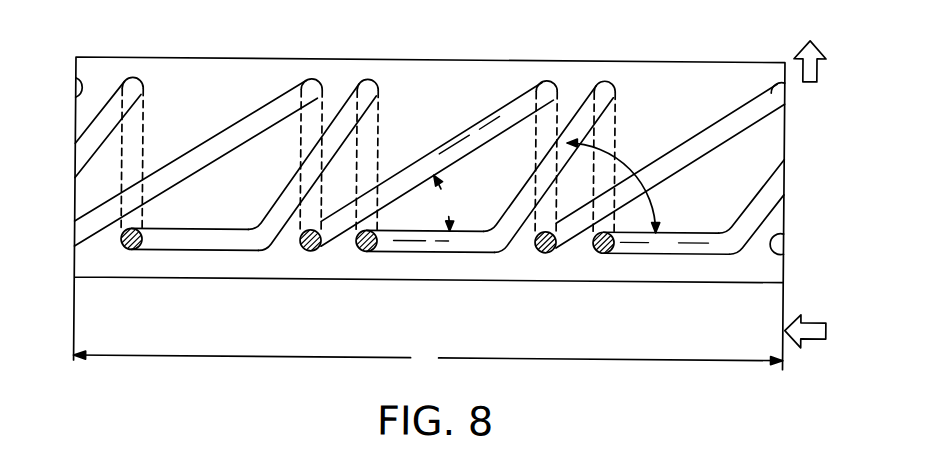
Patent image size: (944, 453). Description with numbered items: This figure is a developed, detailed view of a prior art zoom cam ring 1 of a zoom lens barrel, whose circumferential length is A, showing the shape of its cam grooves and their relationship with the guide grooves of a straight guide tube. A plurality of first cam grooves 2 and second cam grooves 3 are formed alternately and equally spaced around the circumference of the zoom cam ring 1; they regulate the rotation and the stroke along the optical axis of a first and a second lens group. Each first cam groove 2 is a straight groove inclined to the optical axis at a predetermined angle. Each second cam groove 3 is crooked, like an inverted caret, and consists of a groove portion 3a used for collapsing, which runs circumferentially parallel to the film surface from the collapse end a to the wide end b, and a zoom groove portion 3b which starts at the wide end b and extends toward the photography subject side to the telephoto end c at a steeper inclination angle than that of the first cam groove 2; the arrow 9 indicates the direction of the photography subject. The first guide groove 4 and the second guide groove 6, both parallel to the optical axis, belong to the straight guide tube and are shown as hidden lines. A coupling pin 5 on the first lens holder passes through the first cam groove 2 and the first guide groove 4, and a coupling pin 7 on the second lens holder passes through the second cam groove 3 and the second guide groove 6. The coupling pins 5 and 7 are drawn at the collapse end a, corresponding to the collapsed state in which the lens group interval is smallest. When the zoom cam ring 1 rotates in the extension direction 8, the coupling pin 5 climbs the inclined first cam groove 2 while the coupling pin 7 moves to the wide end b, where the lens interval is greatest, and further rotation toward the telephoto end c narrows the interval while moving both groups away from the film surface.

The zoom cam ring 1 is at (142, 57).
The first cam groove 2 is at (229, 124).
The second cam groove 3 is at (429, 162).
The groove portion 3a is at (178, 250).
The zoom groove portion 3b is at (345, 102).
The first guide groove 4 is at (300, 138).
The coupling pin 5 is at (320, 247).
The second guide groove 6 is at (389, 108).
The coupling pin 7 is at (377, 247).
The extension direction 8 is at (813, 317).
The arrow 9 is at (810, 77).
The collapse end a is at (298, 250).
The wide end b is at (458, 145).
The telephoto end c is at (545, 79).
The circumferential length A is at (428, 358).